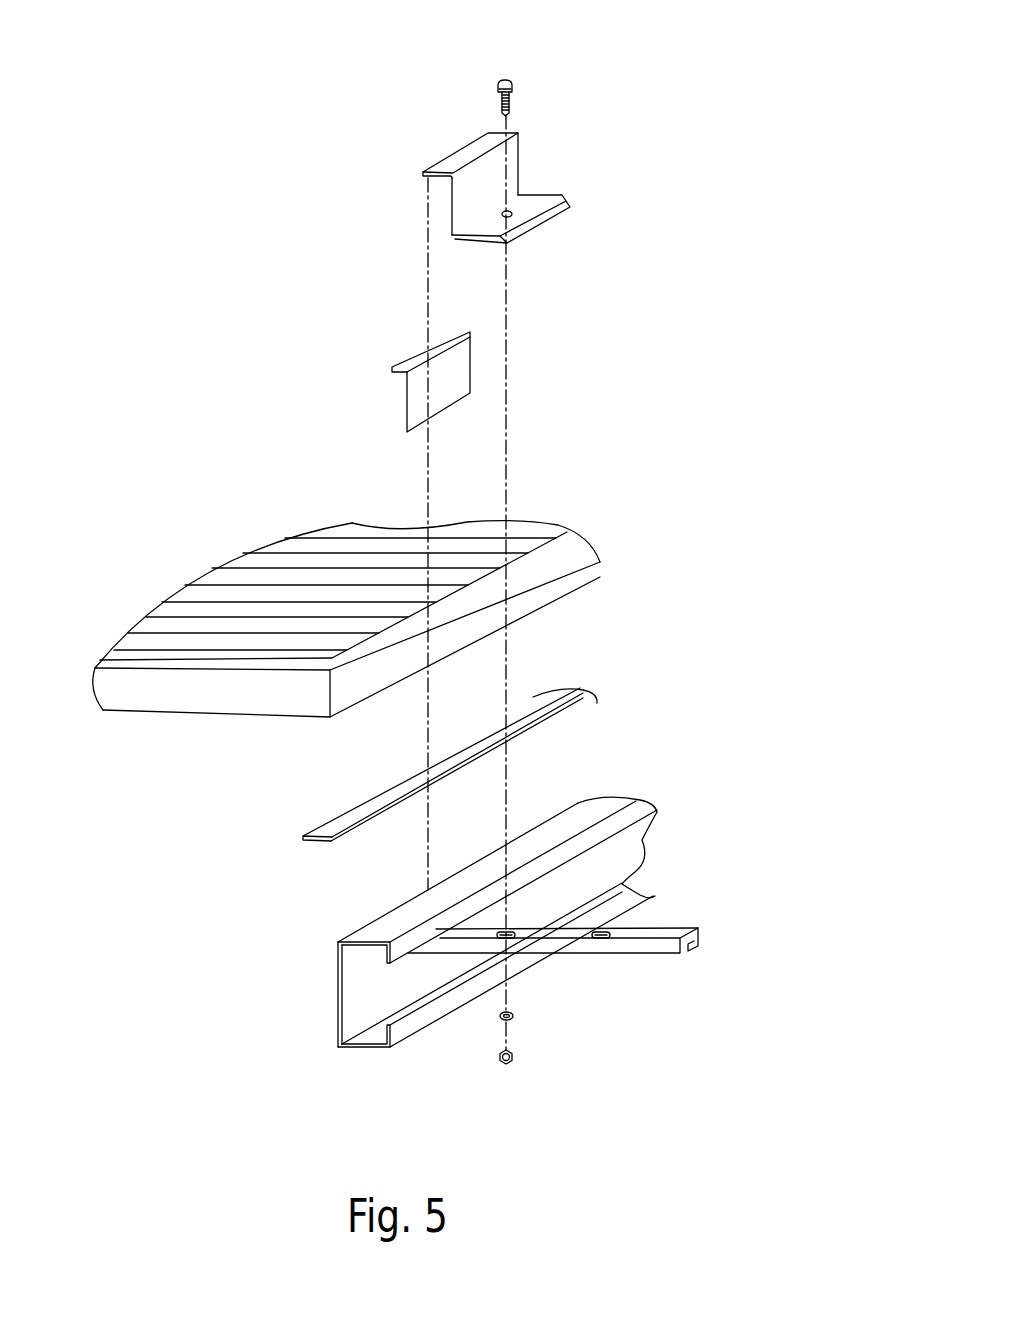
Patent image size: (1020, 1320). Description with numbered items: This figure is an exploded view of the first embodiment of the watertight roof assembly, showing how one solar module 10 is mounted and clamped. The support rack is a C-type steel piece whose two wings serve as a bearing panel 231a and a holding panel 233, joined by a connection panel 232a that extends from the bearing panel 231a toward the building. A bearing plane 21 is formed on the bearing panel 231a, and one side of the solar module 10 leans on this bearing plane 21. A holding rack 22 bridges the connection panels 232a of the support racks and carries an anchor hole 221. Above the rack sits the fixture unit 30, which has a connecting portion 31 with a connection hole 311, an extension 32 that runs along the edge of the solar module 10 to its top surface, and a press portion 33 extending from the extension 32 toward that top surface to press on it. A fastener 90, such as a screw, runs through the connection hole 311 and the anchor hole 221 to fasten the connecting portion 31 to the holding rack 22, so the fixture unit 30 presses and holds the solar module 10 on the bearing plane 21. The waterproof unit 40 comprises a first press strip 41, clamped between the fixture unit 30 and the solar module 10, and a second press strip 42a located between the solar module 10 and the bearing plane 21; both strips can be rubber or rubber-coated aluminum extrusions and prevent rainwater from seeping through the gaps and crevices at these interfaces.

The solar module 10 is at (207, 570).
The bearing plane 21 is at (390, 922).
The holding rack 22 is at (660, 928).
The anchor hole 221 is at (517, 937).
The bearing panel 231a is at (338, 943).
The connection panel 232a is at (338, 1002).
The holding panel 233 is at (372, 1047).
The fixture unit 30 is at (446, 146).
The connecting portion 31 is at (538, 197).
The connection hole 311 is at (511, 216).
The extension 32 is at (518, 157).
The press portion 33 is at (487, 133).
The waterproof unit 40 is at (692, 517).
The first press strip 41 is at (472, 365).
The second press strip 42a is at (450, 773).
The fastener 90 is at (512, 77).